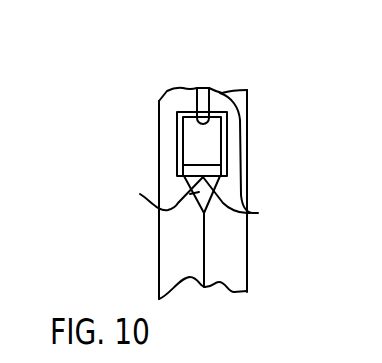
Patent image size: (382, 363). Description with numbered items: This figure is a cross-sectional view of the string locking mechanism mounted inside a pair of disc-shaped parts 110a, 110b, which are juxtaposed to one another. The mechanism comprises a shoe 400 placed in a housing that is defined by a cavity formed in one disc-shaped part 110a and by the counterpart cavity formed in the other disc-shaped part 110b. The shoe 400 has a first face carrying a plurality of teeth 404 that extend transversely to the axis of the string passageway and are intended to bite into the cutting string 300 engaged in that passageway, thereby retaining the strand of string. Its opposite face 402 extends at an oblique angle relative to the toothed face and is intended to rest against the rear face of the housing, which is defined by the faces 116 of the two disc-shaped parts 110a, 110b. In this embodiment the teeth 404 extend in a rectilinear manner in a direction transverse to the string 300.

The disc-shaped part 110a is at (181, 252).
The disc-shaped part 110b is at (237, 273).
The faces of the disc-shaped parts 116 is at (203, 87).
The cutting string 300 is at (182, 190).
The shoe 400 is at (188, 133).
The opposite face 402 is at (190, 91).
The teeth 404 is at (258, 213).